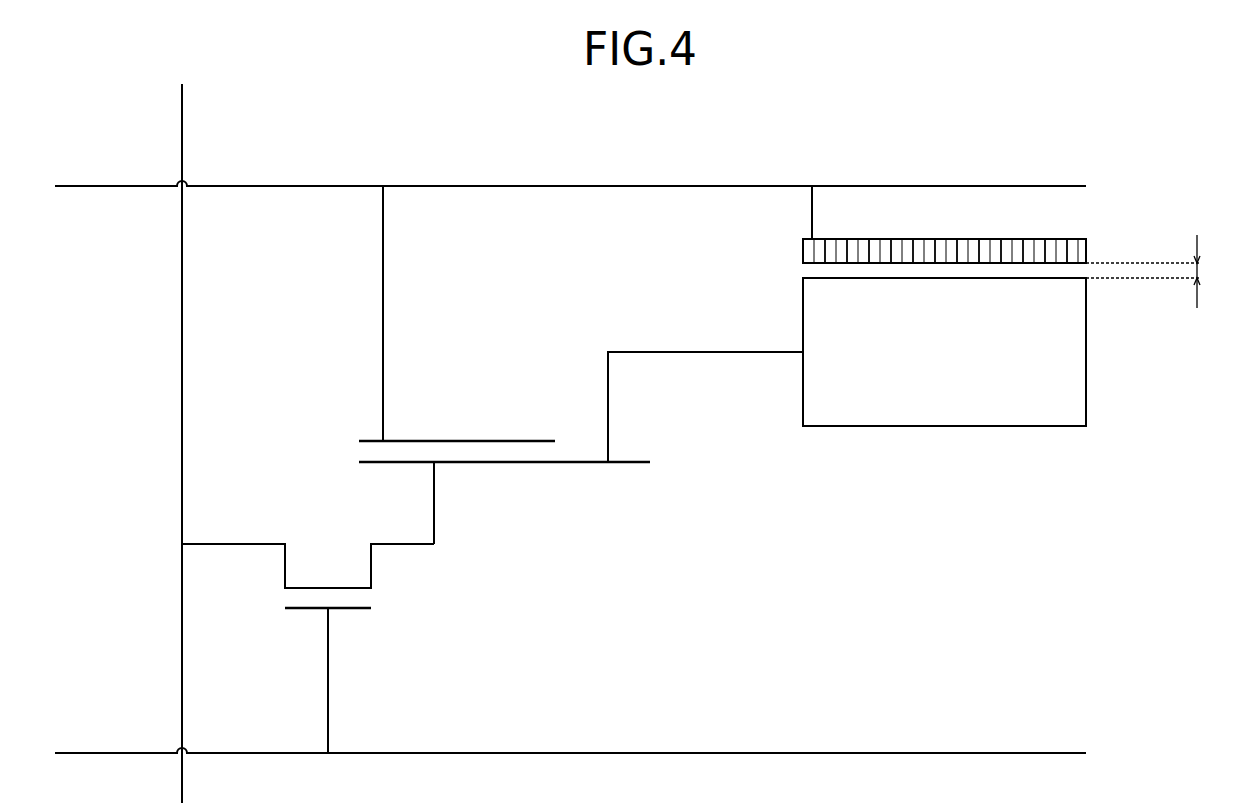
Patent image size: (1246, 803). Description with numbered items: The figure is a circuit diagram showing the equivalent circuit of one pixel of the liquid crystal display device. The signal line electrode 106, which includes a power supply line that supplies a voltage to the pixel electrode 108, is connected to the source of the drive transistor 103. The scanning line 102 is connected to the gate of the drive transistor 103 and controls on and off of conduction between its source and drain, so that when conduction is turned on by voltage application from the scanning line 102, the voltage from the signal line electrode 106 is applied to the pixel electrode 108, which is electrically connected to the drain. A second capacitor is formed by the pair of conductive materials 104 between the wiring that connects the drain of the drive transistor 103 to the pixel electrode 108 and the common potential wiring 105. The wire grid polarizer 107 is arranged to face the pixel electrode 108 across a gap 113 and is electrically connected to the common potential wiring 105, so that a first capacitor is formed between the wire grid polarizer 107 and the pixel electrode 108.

The scanning line 102 is at (713, 752).
The drive transistor 103 is at (375, 569).
The pair of conductive materials 104 is at (455, 438).
The common potential wiring 105 is at (664, 184).
The signal line electrode 106 is at (180, 383).
The wire grid polarizer 107 is at (1088, 246).
The pixel electrode 108 is at (1088, 352).
The insulating layer gap 113 is at (1077, 272).